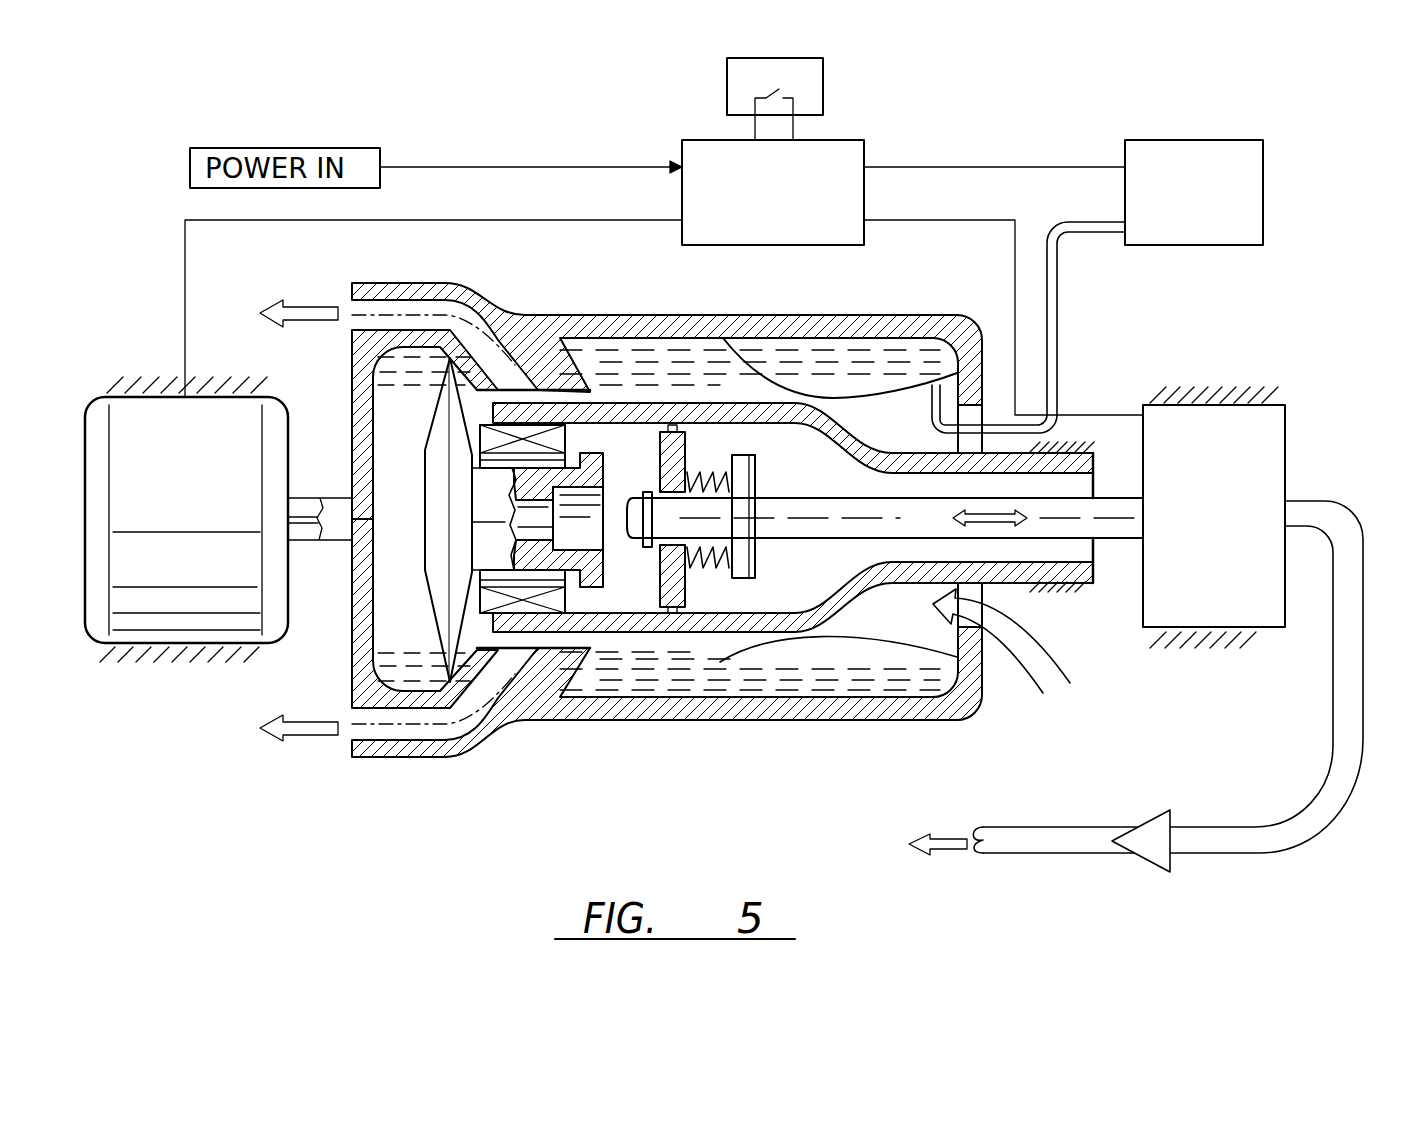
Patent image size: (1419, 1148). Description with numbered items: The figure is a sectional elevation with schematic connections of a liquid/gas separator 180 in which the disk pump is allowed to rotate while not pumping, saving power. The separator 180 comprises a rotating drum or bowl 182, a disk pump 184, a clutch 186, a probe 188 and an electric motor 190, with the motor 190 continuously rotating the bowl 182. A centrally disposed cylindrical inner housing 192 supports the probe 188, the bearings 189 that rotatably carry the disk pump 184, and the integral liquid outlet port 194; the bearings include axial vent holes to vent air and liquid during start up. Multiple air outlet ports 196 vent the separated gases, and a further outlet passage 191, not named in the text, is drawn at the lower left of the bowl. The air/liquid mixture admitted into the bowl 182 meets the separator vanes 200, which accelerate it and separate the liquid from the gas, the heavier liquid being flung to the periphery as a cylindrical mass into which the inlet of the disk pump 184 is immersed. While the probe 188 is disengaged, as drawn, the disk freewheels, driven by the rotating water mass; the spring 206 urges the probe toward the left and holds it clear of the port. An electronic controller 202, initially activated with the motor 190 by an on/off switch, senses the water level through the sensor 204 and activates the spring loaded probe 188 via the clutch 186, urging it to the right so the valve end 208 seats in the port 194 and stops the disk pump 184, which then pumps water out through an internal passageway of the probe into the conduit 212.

The separator 180 is at (956, 262).
The rotating drum or bowl 182 is at (822, 722).
The disk pump 184 is at (427, 432).
The clutch 186 is at (1287, 422).
The probe 188 is at (840, 497).
The bearings 189 is at (452, 300).
The electric motor 190 is at (208, 494).
The lower outlet passage 191 is at (520, 655).
The inner housing 192 is at (860, 603).
The liquid outlet port 194 is at (630, 603).
The air outlet ports 196 is at (545, 660).
The separator vanes 200 is at (845, 388).
The electronic controller 202 is at (866, 150).
The sensor 204 is at (1265, 202).
The spring 206 is at (703, 577).
The valve end 208 is at (630, 503).
The conduit 212 is at (1363, 542).